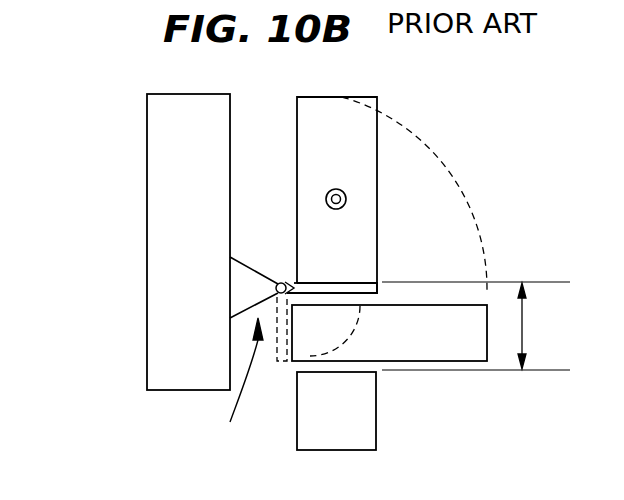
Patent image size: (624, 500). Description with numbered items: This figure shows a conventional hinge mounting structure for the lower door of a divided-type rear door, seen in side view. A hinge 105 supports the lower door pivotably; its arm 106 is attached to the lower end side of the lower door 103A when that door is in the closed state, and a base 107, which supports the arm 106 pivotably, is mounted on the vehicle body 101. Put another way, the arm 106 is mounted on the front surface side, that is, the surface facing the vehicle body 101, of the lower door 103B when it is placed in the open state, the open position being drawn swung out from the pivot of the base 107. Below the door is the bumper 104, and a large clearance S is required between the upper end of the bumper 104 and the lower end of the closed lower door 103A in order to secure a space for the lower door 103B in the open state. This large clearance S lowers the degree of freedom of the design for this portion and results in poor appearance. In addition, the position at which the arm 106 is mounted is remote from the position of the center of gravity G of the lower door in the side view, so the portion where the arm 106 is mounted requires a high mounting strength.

The vehicle body 101 is at (165, 161).
The lower door in closed state 103A is at (361, 119).
The lower door in open state 103B is at (445, 340).
The bumper 104 is at (353, 420).
The hinge 105 is at (236, 385).
The arm 106 is at (338, 284).
The base 107 is at (242, 287).
The center of gravity G is at (327, 196).
The clearance S is at (476, 326).